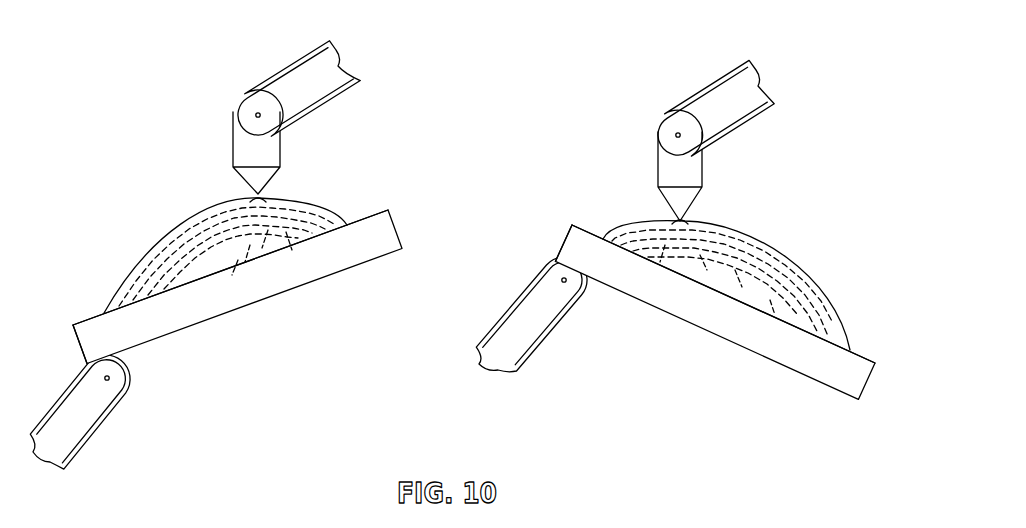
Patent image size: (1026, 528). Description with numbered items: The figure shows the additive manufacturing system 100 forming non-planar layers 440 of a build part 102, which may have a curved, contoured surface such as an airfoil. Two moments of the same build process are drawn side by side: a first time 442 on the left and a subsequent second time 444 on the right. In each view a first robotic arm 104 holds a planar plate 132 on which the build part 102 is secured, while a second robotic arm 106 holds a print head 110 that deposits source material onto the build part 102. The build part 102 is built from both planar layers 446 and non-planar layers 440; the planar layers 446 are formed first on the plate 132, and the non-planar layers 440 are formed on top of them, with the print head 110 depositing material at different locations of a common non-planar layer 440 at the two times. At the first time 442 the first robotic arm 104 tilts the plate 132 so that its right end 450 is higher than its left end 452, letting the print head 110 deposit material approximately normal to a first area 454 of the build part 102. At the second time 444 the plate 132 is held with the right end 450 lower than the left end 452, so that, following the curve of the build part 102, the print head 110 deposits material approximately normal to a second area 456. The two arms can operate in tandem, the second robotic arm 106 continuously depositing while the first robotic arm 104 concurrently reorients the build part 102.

The additive manufacturing system 100 is at (413, 62).
The build part 102 is at (122, 282).
The first robotic arm 104 is at (63, 410).
The second robotic arm 106 is at (285, 90).
The print head 110 is at (253, 180).
The plate 132 is at (252, 287).
The non-planar layers 440 is at (292, 200).
The first time 442 is at (226, 382).
The second time 444 is at (640, 402).
The planar layers 446 is at (277, 243).
The right end 450 is at (400, 230).
The left end 452 is at (75, 340).
The first area 454 is at (250, 200).
The second area 456 is at (677, 223).